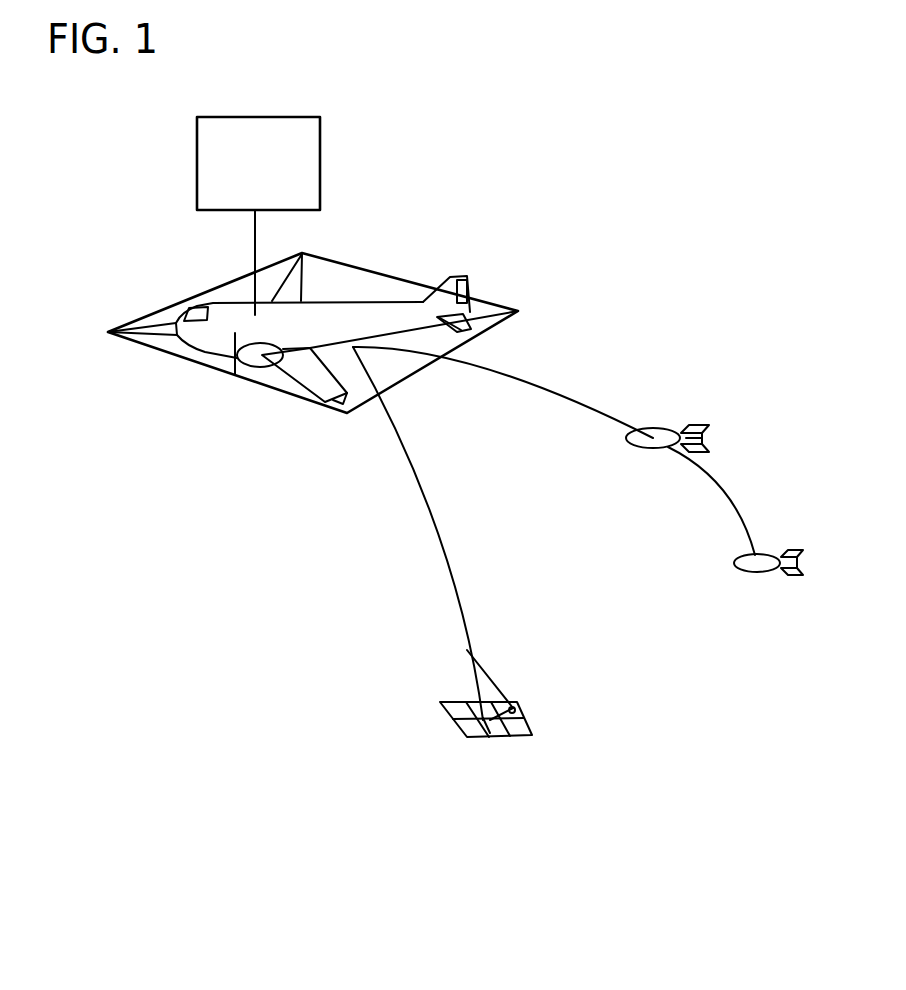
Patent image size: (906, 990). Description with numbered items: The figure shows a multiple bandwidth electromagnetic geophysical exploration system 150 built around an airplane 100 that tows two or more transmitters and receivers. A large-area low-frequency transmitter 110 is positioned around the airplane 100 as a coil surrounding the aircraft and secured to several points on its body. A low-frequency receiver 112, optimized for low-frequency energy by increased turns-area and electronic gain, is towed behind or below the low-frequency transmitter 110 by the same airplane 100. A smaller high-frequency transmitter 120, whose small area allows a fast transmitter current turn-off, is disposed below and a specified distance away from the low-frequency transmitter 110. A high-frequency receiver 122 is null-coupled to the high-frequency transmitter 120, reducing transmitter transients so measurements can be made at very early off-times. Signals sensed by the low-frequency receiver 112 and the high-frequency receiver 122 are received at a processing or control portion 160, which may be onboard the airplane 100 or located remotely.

The airplane 100 is at (355, 320).
The low-frequency transmitter 110 is at (288, 397).
The low-frequency receiver 112 is at (658, 450).
The high-frequency transmitter 120 is at (484, 730).
The high-frequency receiver 122 is at (457, 727).
The multiple bandwidth electromagnetic geophysical exploration system 150 is at (132, 207).
The control portion 160 is at (277, 194).